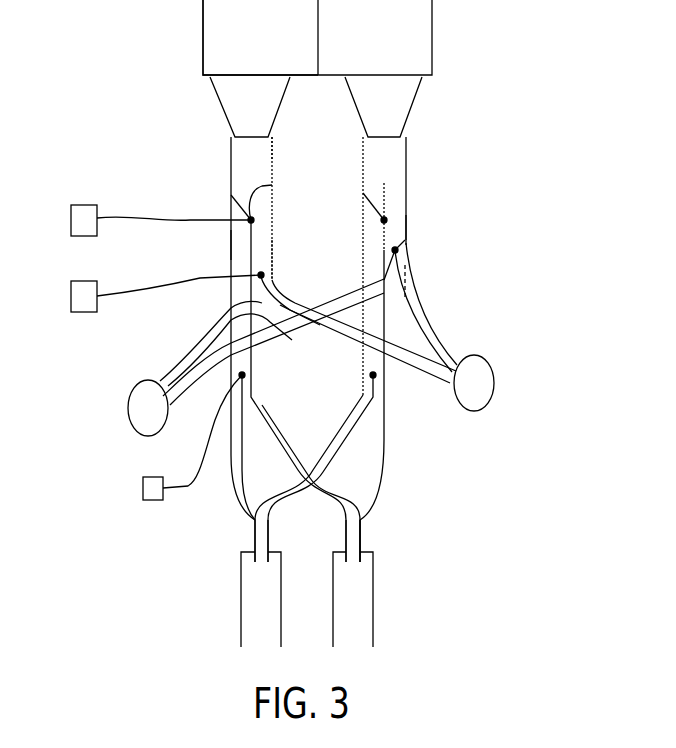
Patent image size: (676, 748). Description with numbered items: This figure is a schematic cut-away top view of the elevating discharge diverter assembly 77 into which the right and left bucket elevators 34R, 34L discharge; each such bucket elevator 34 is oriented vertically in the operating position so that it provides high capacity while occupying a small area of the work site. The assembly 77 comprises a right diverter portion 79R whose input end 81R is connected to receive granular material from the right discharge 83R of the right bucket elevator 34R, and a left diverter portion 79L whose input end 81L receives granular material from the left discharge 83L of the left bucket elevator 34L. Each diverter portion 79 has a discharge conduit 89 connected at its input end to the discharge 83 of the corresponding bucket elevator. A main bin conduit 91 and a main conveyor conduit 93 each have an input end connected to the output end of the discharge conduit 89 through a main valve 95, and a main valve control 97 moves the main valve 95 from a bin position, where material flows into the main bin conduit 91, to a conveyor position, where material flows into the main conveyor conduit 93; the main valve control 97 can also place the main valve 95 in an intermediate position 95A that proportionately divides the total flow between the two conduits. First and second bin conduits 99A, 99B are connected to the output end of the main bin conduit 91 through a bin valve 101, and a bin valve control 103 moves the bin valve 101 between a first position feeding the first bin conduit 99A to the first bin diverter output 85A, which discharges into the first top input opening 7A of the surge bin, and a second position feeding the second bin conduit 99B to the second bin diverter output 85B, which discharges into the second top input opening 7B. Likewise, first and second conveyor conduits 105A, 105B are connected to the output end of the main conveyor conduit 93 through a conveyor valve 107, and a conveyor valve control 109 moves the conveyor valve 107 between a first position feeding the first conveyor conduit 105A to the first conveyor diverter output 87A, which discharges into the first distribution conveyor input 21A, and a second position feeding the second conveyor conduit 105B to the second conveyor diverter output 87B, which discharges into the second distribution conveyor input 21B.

The bucket elevator 34 is at (334, 37).
The left bucket elevator 34L is at (432, 28).
The right bucket elevator 34R is at (203, 29).
The discharge 83 is at (207, 107).
The right discharge 83R is at (220, 100).
The left discharge 83L is at (415, 96).
The input end 81R is at (231, 143).
The input end 81L is at (406, 145).
The discharge conduit 89 is at (272, 157).
The main valve 95 is at (272, 186).
The main bin conduit 91 is at (272, 228).
The bin valve 101 is at (270, 256).
The main valve control 97 is at (83, 205).
The bin valve control 103 is at (83, 281).
The diverter portion 79 is at (175, 245).
The right diverter portion 79R is at (224, 249).
The left diverter portion 79L is at (410, 228).
The intermediate position 95A is at (384, 184).
The elevating discharge diverter assembly 77 is at (508, 200).
The first bin conduit 99A is at (280, 285).
The second bin conduit 99B is at (216, 325).
The first bin diverter output 85A is at (457, 362).
The second bin diverter output 85B is at (165, 381).
The first top input opening 7A is at (494, 385).
The second top input opening 7B is at (128, 410).
The main conveyor conduit 93 is at (292, 338).
The conveyor valve 107 is at (244, 375).
The conveyor valve control 109 is at (143, 488).
The first conveyor conduit 105A is at (276, 428).
The second conveyor conduit 105B is at (230, 461).
The first distribution conveyor input 21A is at (364, 563).
The second distribution conveyor input 21B is at (250, 563).
The first conveyor diverter output 87A is at (355, 563).
The second conveyor diverter output 87B is at (259, 563).